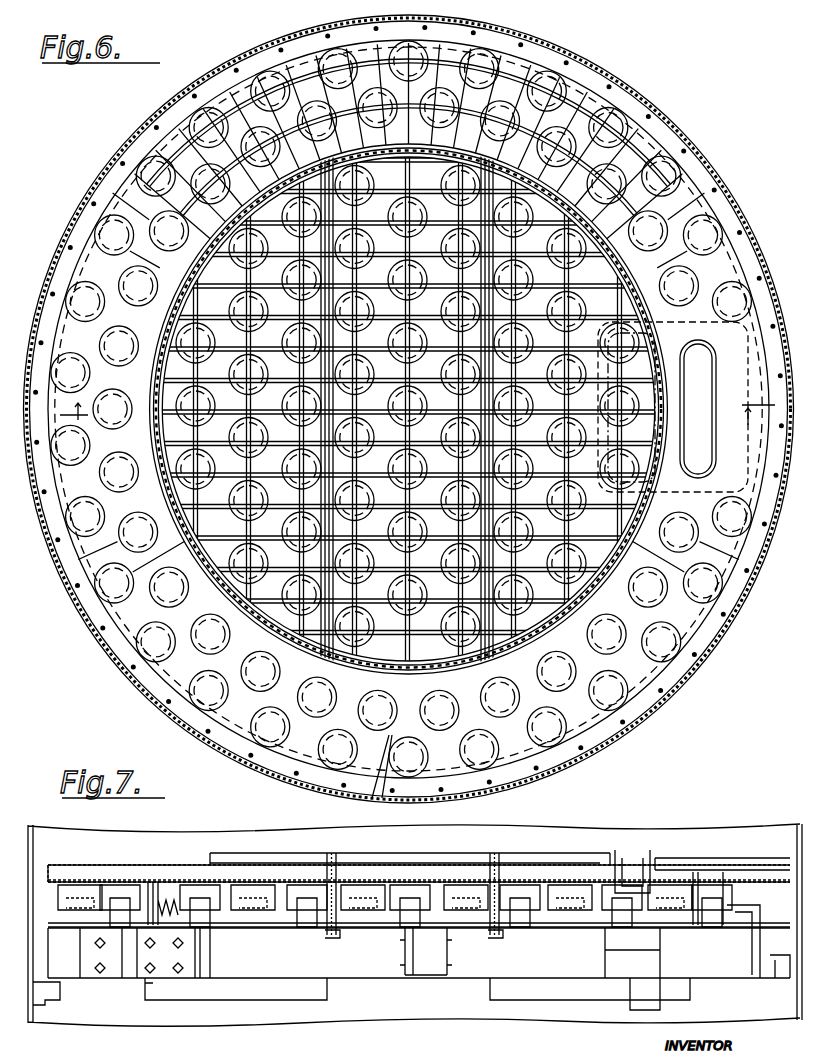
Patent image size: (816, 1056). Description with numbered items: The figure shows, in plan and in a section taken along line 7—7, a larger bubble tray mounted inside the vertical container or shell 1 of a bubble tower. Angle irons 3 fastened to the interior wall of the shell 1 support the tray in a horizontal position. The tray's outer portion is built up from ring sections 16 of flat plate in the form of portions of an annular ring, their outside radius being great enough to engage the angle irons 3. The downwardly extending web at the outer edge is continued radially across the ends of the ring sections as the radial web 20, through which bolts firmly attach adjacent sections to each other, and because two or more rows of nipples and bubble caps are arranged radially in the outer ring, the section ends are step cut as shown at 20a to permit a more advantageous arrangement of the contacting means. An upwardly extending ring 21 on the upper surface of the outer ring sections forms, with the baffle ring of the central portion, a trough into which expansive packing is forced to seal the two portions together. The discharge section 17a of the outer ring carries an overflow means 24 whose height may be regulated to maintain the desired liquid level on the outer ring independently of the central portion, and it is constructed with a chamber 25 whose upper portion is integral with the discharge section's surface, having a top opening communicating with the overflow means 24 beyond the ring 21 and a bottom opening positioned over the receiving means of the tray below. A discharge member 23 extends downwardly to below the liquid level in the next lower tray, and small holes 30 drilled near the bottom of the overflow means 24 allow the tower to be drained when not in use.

In FIG. 7, the vertical container or shell 1 is at (31, 849).
In FIG. 7, the angle irons 3 is at (38, 994).
In FIG. 6, the connection 7 is at (417, 417).
In FIG. 6, the ring sections 16 is at (645, 687).
In FIG. 6, the discharge section of the outer ring portion (larger bubble trays) 17a is at (740, 553).
In FIG. 7, the discharge section of the outer ring portion (larger bubble trays) 17a is at (780, 980).
In FIG. 7, the radial web 20 is at (120, 968).
In FIG. 6, the step cut 20a is at (705, 612).
In FIG. 6, the upwardly extending ring 21 is at (314, 646).
In FIG. 7, the upwardly extending ring 21 is at (150, 900).
In FIG. 6, the discharge member 23 is at (646, 340).
In FIG. 7, the discharge member 23 is at (632, 852).
In FIG. 6, the overflow means 24 is at (710, 478).
In FIG. 7, the overflow means 24 is at (712, 890).
In FIG. 6, the chamber 25 is at (700, 268).
In FIG. 7, the chamber 25 is at (620, 960).
In FIG. 6, the small holes 30 is at (712, 397).
In FIG. 7, the small holes 30 is at (760, 916).